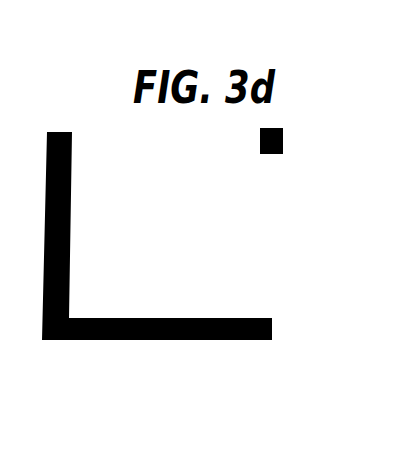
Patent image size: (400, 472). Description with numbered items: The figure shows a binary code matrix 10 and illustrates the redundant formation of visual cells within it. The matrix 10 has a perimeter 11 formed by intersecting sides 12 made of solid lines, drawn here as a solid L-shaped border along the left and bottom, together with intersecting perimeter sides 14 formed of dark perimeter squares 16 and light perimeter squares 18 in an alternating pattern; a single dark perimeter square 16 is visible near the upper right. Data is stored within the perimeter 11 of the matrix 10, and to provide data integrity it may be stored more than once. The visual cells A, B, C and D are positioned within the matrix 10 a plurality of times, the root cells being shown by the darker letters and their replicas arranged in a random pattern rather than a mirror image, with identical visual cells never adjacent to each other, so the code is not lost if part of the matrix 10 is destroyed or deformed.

The matrix 10 is at (303, 171).
The perimeter 11 is at (315, 275).
The sides 12 is at (156, 341).
The perimeter sides 14 is at (104, 122).
The dark perimeter squares 16 is at (285, 142).
The light perimeter squares 18 is at (140, 130).